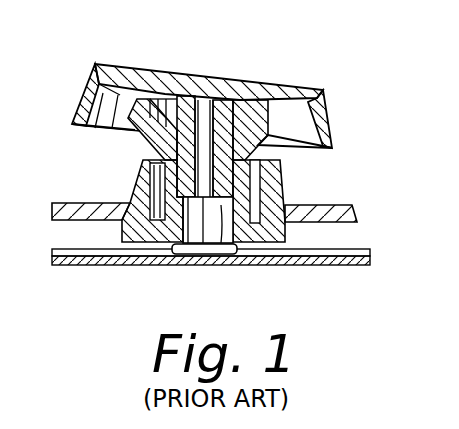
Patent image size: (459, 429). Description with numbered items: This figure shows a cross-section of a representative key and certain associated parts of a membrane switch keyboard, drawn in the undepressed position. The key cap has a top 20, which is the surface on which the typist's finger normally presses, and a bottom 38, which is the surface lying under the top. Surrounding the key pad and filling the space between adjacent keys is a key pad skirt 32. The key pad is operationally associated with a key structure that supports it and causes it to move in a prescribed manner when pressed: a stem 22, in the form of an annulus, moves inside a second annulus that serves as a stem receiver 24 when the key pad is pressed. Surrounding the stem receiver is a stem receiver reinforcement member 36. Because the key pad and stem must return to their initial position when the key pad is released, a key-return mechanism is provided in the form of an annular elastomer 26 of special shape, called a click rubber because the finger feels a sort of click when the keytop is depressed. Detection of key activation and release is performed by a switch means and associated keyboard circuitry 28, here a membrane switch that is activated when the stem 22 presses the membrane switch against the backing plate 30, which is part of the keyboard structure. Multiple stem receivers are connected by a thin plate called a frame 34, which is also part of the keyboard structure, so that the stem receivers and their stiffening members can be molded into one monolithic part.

The top of key cap 20 is at (262, 83).
The stem 22 is at (227, 262).
The stem receiver 24 is at (188, 258).
The annular elastomer 26 is at (257, 137).
The switch means and associated keyboard circuitry 28 is at (362, 249).
The backing plate 30 is at (362, 267).
The key pad skirt 32 is at (330, 100).
The frame 34 is at (340, 205).
The stem receiver reinforcement member 36 is at (143, 168).
The bottom of key cap 38 is at (108, 128).